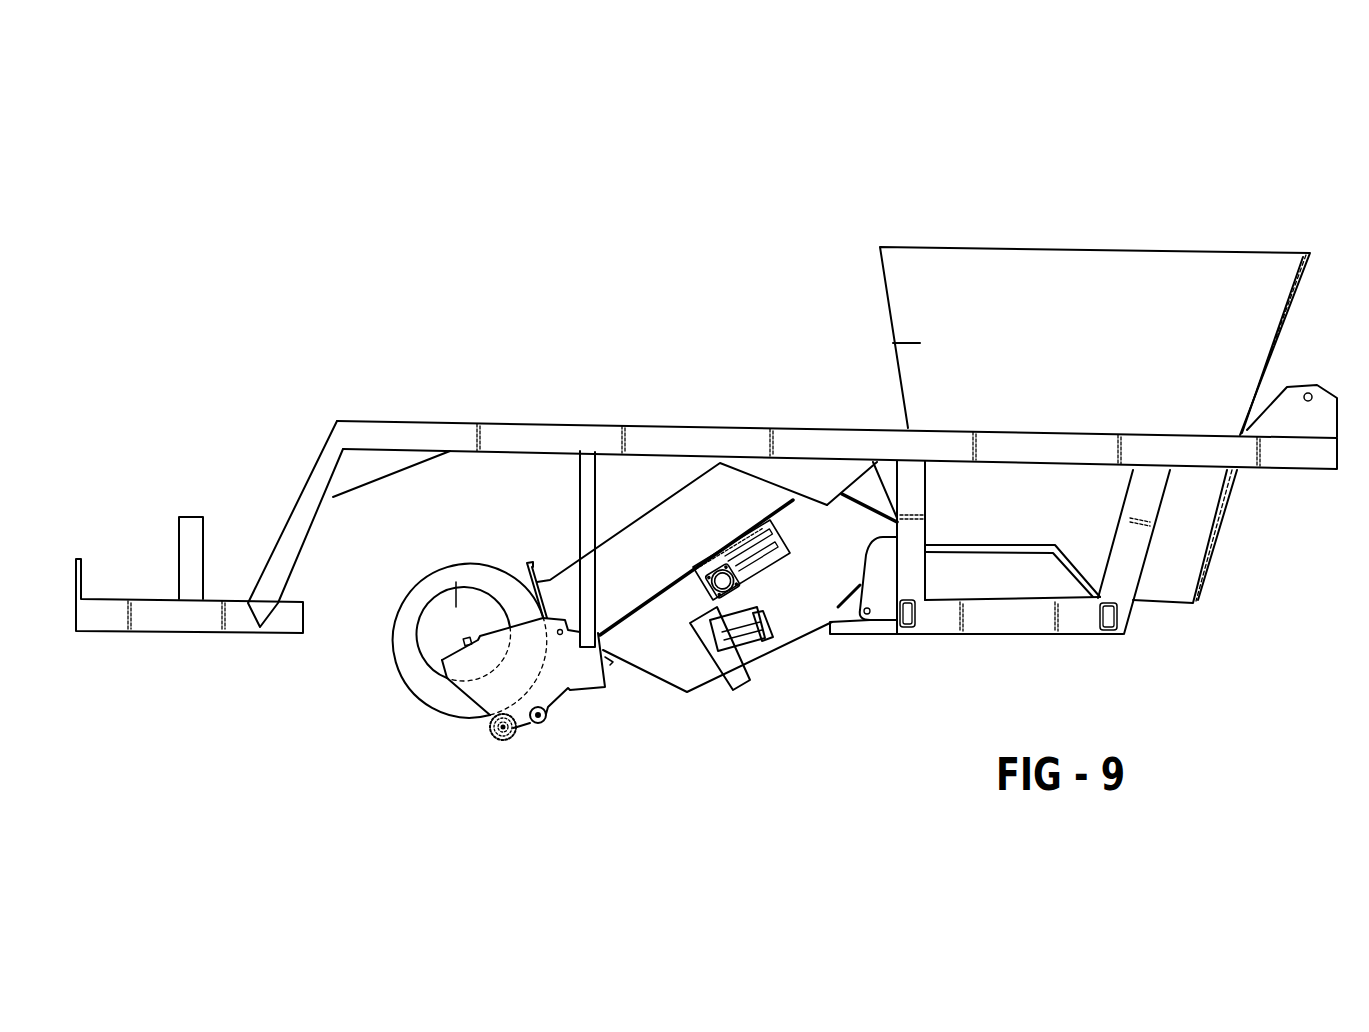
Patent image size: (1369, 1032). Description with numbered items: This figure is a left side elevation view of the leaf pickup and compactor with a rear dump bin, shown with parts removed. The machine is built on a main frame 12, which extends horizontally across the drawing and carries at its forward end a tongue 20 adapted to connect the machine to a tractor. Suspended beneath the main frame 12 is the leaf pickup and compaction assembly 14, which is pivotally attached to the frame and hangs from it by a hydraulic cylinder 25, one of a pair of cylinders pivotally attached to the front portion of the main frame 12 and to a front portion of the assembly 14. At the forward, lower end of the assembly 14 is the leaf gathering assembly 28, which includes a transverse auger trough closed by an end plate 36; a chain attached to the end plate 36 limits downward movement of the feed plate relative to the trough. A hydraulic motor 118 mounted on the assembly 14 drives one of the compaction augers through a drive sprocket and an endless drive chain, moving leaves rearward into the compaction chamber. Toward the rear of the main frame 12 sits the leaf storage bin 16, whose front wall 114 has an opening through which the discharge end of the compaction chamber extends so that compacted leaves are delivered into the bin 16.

The main frame 12 is at (1280, 462).
The leaf pickup and compaction assembly 14 is at (675, 675).
The leaf storage bin 16 is at (1152, 250).
The tongue 20 is at (187, 629).
The hydraulic cylinder 25 is at (577, 497).
The leaf gathering assembly 28 is at (386, 573).
The end plate 36 is at (455, 678).
The front wall 114 is at (905, 343).
The hydraulic motor 118 is at (763, 643).